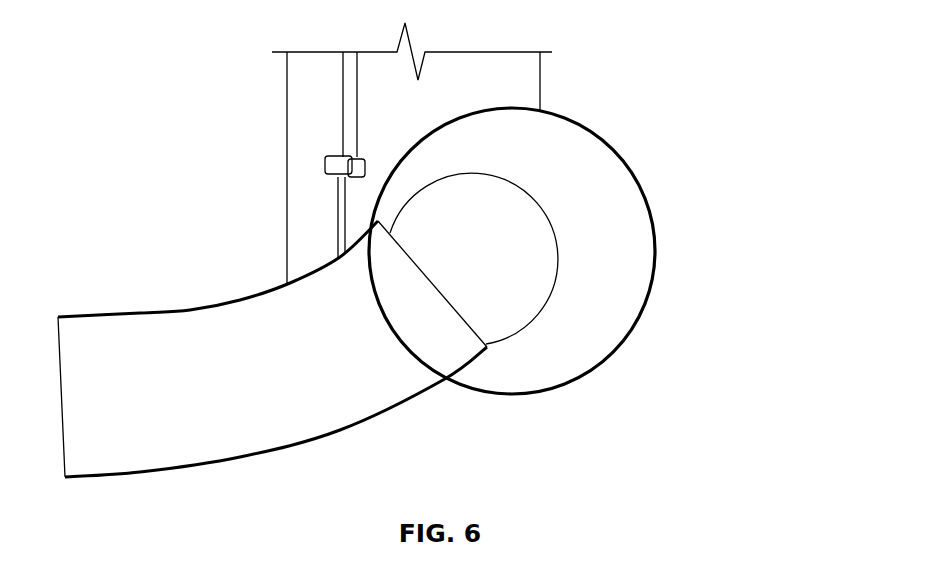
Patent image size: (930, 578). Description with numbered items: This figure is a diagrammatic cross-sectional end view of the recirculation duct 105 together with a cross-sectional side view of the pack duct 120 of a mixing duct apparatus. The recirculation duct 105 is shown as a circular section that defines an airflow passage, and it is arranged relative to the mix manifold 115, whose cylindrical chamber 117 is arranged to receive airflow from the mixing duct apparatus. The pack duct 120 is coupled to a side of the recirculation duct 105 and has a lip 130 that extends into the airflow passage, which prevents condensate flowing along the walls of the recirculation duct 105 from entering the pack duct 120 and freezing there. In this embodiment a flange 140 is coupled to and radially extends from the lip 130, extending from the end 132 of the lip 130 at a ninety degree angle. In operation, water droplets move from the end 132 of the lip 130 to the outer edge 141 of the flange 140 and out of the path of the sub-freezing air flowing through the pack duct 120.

The recirculation duct 105 is at (658, 221).
The mix manifold 115 is at (286, 92).
The cylindrical chamber 117 is at (522, 245).
The pack duct 120 is at (140, 303).
The lip 130 is at (366, 229).
The end of the lip 132 is at (492, 340).
The flange 140 is at (486, 356).
The outer edge 141 is at (493, 360).